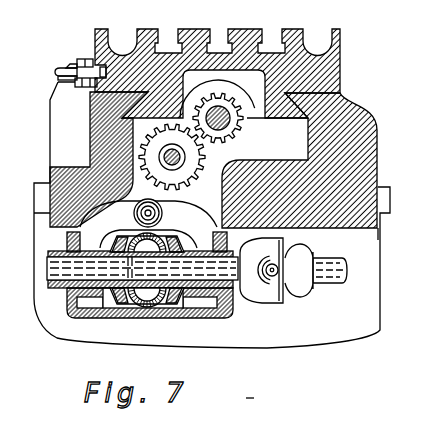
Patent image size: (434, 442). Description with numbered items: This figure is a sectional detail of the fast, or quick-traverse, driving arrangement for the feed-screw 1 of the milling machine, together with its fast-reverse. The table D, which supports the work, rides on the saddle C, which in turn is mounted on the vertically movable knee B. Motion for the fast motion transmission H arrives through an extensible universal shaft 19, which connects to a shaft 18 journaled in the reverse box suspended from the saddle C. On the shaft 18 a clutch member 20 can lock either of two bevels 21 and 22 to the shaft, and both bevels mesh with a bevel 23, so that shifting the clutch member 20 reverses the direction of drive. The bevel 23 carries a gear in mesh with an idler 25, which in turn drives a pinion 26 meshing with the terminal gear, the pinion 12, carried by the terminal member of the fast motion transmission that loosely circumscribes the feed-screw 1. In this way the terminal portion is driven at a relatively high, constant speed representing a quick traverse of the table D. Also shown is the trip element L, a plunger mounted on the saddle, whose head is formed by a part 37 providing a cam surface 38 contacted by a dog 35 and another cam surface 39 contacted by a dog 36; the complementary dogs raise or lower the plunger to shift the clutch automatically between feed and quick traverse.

The feed-screw 1 is at (223, 113).
The pinion 12 is at (241, 130).
The shaft 18 is at (248, 292).
The extensible universal shaft 19 is at (331, 259).
The clutch member 20 is at (143, 304).
The bevel 21 is at (116, 302).
The bevel 22 is at (181, 302).
The bevel 23 is at (161, 300).
The idler 25 is at (165, 207).
The pinion 26 is at (186, 160).
The dog 35 is at (83, 59).
The dog 36 is at (88, 88).
The part 37 is at (57, 70).
The cam surface 38 is at (68, 66).
The cam surface 39 is at (57, 78).
The knee B is at (340, 336).
The saddle C is at (373, 143).
The table D is at (337, 78).
The fast motion transmission H is at (329, 263).
The trip element L is at (55, 86).